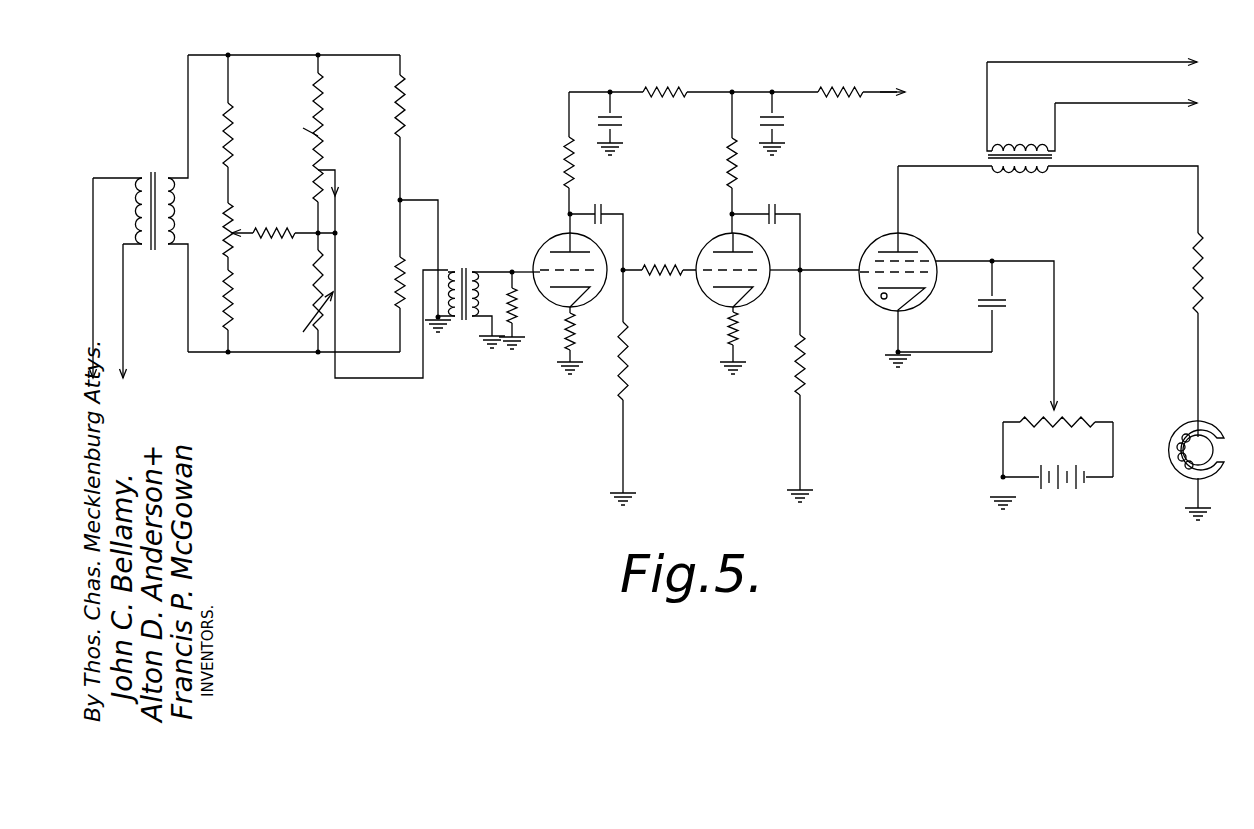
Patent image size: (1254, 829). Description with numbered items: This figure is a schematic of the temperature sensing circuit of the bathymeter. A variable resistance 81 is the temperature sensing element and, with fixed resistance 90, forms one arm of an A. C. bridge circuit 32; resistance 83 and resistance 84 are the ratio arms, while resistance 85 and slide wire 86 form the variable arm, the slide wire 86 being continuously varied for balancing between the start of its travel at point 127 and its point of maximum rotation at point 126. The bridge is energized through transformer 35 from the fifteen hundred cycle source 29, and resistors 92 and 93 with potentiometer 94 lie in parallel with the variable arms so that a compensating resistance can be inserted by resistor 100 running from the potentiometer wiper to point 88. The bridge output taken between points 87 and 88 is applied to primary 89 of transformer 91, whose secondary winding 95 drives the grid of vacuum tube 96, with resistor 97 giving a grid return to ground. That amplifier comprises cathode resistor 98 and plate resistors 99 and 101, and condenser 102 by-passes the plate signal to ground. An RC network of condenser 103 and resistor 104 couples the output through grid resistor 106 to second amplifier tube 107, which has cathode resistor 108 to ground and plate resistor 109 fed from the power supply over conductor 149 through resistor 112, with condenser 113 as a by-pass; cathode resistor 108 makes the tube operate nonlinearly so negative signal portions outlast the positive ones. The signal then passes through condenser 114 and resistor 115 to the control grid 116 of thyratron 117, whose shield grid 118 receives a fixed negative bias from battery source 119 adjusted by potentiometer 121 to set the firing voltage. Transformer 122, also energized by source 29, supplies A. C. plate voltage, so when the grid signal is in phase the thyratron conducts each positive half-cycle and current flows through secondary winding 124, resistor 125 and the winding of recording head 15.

The recording head 15 is at (1216, 440).
The 1500 cycle source 29 is at (648, 219).
The A. C. bridge circuit 32 is at (338, 36).
The transformer 35 is at (140, 164).
The variable resistance 81 is at (308, 318).
The resistance 83 is at (402, 262).
The resistance 84 is at (413, 127).
The resistance 85 is at (322, 112).
The slide wire 86 is at (322, 172).
The point 87 is at (402, 200).
The point 88 is at (337, 231).
The primary 89 is at (455, 322).
The fixed resistance 90 is at (314, 276).
The transformer 91 is at (453, 254).
The resistor 92 is at (232, 148).
The resistor 93 is at (232, 305).
The potentiometer 94 is at (232, 220).
The secondary winding 95 is at (510, 298).
The vacuum tube 96 is at (566, 298).
The resistor 97 is at (516, 342).
The cathode resistor 98 is at (574, 338).
The plate resistor 99 is at (565, 170).
The resistor 100 is at (273, 238).
The plate resistor 101 is at (665, 88).
The condenser 102 is at (624, 120).
The condenser 103 is at (606, 208).
The resistor 104 is at (630, 376).
The grid resistor 106 is at (660, 262).
The amplifier tube 107 is at (722, 298).
The cathode resistor 108 is at (740, 334).
The plate resistor 109 is at (736, 184).
The resistor 112 is at (834, 88).
The condenser 113 is at (786, 116).
The condenser 114 is at (780, 212).
The resistor 115 is at (808, 372).
The control grid 116 is at (862, 266).
The thyratron 117 is at (890, 304).
The shield grid 118 is at (922, 260).
The battery source 119 is at (1064, 490).
The potentiometer 121 is at (1080, 416).
The transformer 122 is at (1072, 156).
The secondary winding 124 is at (1016, 176).
The resistor 125 is at (1204, 270).
The point 126 is at (318, 200).
The point 127 is at (298, 122).
The conductor 149 is at (890, 92).